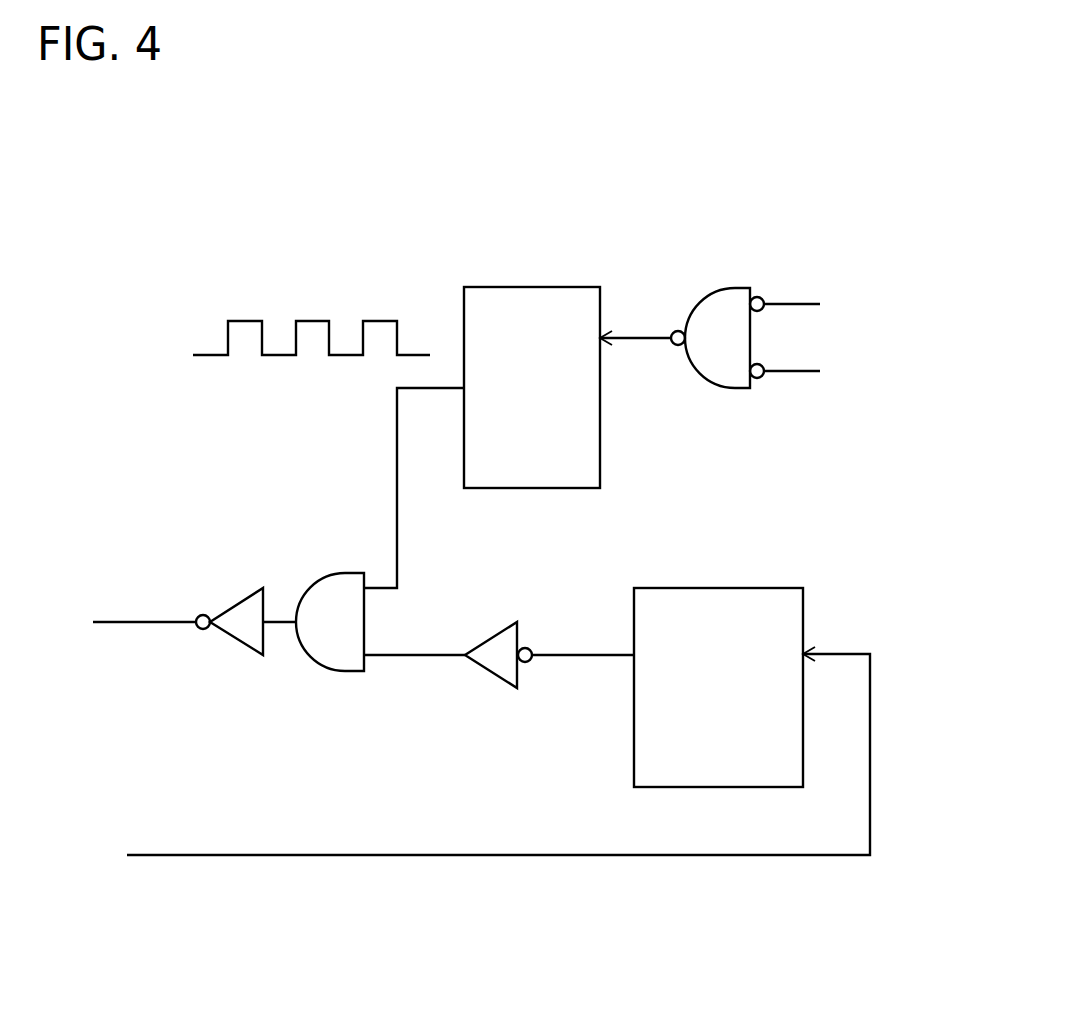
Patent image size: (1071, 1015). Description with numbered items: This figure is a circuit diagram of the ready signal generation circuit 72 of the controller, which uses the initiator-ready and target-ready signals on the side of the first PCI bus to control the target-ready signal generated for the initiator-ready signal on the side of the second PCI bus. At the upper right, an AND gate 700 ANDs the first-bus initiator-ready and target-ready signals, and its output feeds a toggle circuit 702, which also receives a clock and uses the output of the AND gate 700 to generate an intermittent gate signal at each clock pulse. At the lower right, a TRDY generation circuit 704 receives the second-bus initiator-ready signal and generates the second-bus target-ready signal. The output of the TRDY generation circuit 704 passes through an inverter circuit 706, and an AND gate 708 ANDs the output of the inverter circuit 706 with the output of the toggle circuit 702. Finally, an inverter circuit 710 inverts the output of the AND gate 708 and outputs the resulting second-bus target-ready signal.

The ready signal generation circuit 72 is at (790, 252).
The AND gate 700 is at (739, 381).
The toggle circuit 702 is at (553, 482).
The TRDY generation circuit 704 is at (762, 588).
The inverter circuit 706 is at (487, 663).
The AND gate 708 is at (333, 672).
The inverter circuit 710 is at (233, 648).